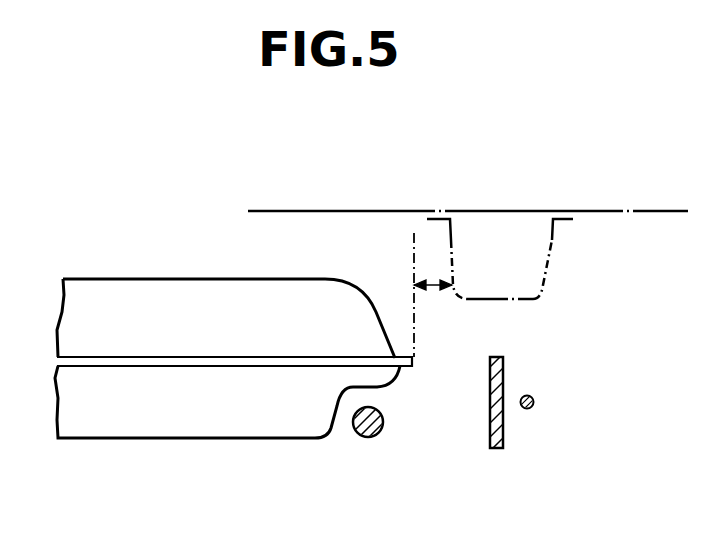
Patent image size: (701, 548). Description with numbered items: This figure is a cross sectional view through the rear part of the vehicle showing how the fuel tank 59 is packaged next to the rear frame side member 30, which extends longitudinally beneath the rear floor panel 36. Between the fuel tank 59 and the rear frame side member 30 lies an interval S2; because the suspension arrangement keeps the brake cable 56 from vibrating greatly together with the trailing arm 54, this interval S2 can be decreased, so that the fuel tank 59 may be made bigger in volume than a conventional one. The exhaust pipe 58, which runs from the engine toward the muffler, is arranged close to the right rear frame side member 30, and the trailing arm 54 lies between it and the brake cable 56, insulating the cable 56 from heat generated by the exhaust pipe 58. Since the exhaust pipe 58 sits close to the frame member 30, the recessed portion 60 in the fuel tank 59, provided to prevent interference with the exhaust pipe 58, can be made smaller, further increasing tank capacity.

The fuel tank 59 is at (158, 273).
The recessed portion 60 is at (338, 421).
The exhaust pipe 58 is at (383, 432).
The rear floor panel 36 is at (608, 211).
The rear frame side member 30 is at (543, 281).
The interval S2 is at (432, 290).
The trailing arm 54 is at (497, 448).
The brake cable 56 is at (534, 405).